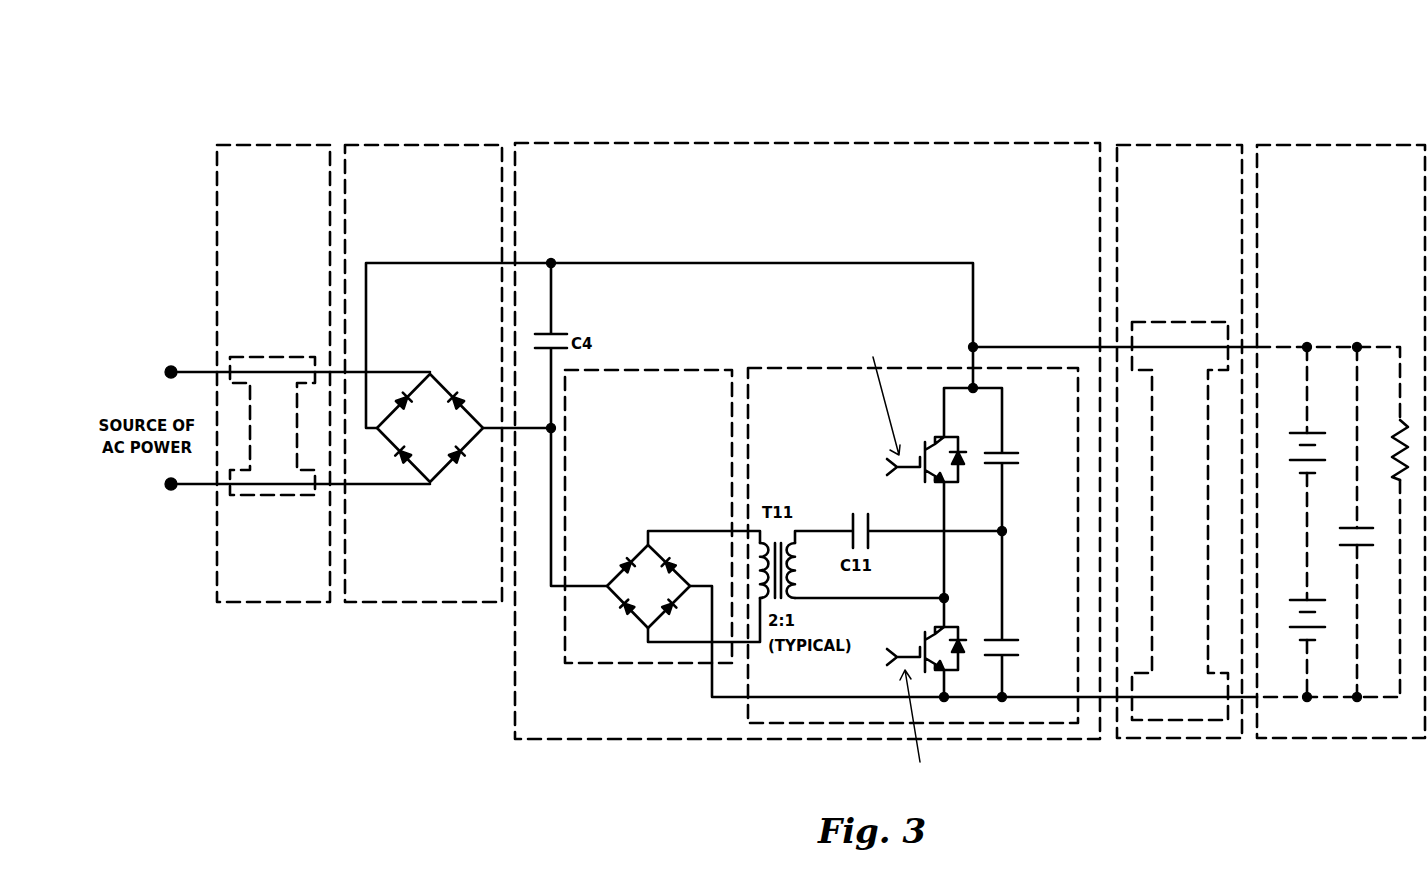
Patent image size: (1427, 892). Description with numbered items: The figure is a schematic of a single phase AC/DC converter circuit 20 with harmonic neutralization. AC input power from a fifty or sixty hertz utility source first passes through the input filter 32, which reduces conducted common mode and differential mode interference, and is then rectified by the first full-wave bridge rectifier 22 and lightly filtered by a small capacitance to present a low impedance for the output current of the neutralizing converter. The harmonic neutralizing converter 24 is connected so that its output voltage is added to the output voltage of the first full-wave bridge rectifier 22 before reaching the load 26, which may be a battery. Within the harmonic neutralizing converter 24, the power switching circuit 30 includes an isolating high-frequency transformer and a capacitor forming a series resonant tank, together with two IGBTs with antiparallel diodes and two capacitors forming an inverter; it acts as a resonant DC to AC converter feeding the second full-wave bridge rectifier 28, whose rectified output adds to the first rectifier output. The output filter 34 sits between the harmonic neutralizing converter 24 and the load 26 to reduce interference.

The AC/DC converter circuit 20 is at (921, 86).
The first full-wave bridge rectifier 22 is at (432, 145).
The harmonic neutralizing converter 24 is at (709, 143).
The load 26 is at (1352, 145).
The second full-wave bridge rectifier 28 is at (615, 663).
The power switching circuit 30 is at (868, 725).
The input filter 32 is at (266, 145).
The output filter 34 is at (1167, 145).